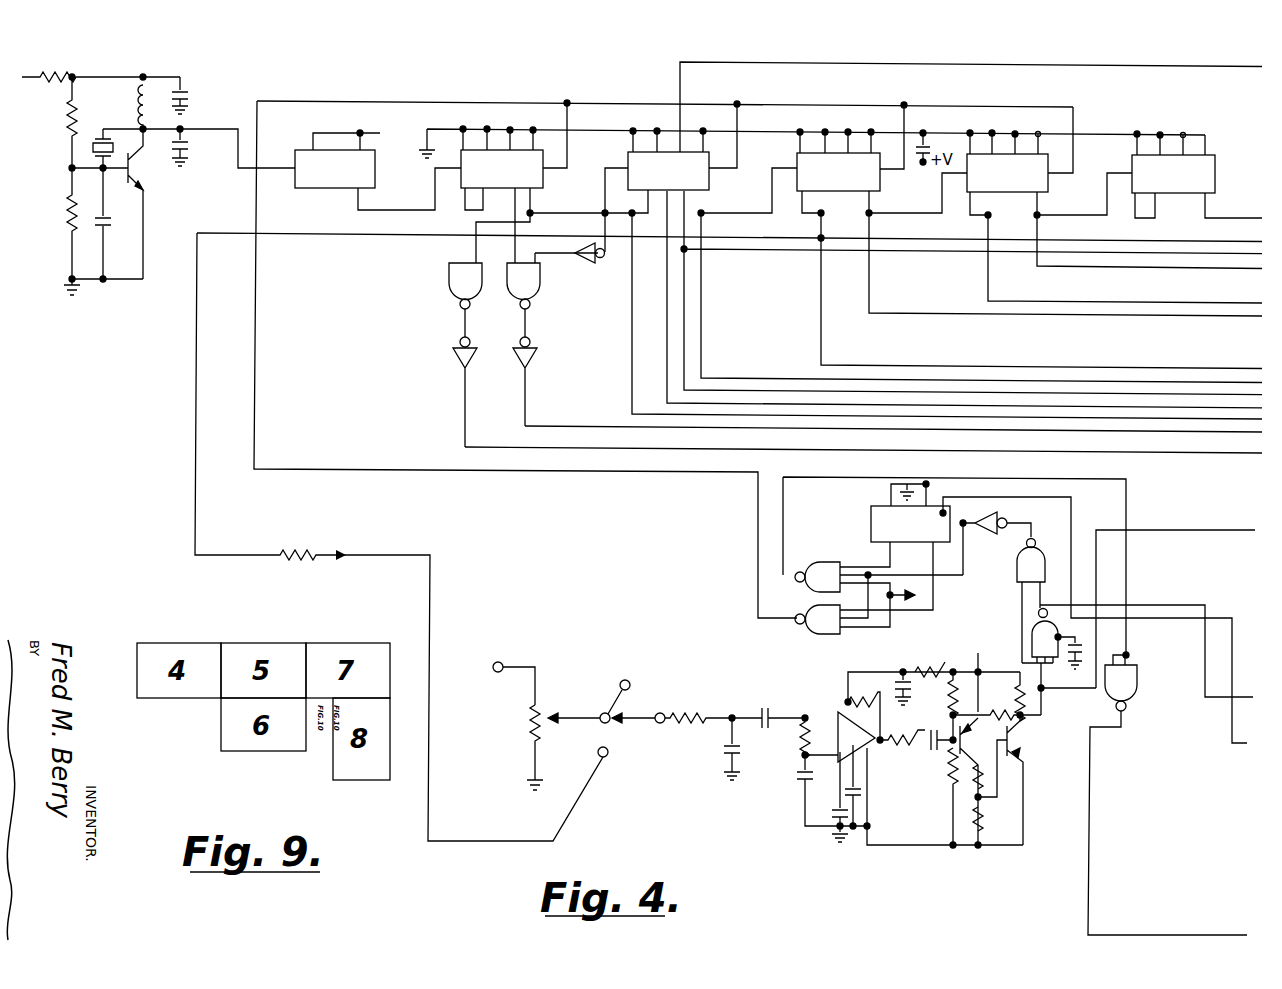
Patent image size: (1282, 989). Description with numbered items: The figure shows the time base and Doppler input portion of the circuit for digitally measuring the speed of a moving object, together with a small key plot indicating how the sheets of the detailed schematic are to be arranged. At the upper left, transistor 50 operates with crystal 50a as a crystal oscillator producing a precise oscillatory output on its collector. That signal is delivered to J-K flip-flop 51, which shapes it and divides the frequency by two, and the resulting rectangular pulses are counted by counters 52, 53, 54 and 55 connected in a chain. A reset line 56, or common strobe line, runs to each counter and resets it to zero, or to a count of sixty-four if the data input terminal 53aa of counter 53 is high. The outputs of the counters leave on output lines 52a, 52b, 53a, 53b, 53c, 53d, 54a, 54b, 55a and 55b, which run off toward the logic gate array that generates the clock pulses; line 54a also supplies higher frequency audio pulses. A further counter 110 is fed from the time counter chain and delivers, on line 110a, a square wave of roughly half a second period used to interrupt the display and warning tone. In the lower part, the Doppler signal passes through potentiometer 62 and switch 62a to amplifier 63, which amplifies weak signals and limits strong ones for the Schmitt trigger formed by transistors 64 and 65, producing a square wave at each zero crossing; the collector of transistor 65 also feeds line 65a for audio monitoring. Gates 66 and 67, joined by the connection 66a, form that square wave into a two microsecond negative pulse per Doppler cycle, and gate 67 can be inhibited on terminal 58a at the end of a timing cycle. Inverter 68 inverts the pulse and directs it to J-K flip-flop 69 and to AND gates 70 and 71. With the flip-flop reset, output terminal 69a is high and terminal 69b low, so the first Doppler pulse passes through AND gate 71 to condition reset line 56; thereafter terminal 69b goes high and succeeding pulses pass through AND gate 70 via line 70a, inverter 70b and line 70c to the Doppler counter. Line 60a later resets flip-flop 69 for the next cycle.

The transistor 50 is at (132, 183).
The crystal 50a is at (100, 137).
The J-K flip-flop 51 is at (378, 170).
The counter 52 is at (812, 183).
The output line 52a is at (580, 426).
The output line 52b is at (652, 452).
The counter 53 is at (699, 178).
The output line 53a is at (632, 318).
The data input terminal 53aa is at (680, 72).
The output line 53b is at (797, 404).
The output line 53c is at (1194, 253).
The output line 53d is at (701, 333).
The counter 54 is at (882, 160).
The output line 54a is at (936, 244).
The output line 54b is at (936, 310).
The counter 55 is at (1049, 162).
The output line 55a is at (1080, 300).
The output line 55b is at (1170, 270).
The reset line 56 is at (822, 105).
The terminal 58a is at (1192, 603).
The line 60a is at (1232, 660).
The potentiometer 62 is at (548, 708).
The switch 62a is at (628, 714).
The amplifier 63 is at (845, 722).
The transistor 64 is at (975, 736).
The transistor 65 is at (1020, 738).
The line 65a is at (1236, 528).
The gate 66 is at (1059, 662).
The connection line 66a is at (1048, 596).
The gate 67 is at (1135, 618).
The inverter 68 is at (992, 535).
The J-K flip-flop 69 is at (1059, 612).
The output terminal 69a is at (933, 568).
The output terminal 69b is at (890, 554).
The AND gate 70 is at (879, 594).
The line 70a is at (783, 530).
The inverter 70b is at (1137, 678).
The line 70c is at (1196, 936).
The AND gate 71 is at (831, 604).
The counter 110 is at (1173, 174).
The line 110a is at (1240, 226).